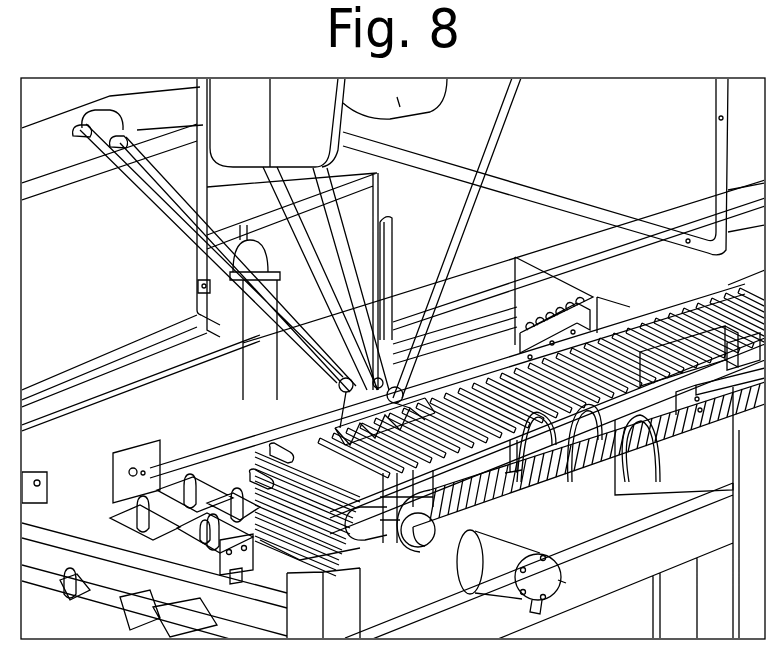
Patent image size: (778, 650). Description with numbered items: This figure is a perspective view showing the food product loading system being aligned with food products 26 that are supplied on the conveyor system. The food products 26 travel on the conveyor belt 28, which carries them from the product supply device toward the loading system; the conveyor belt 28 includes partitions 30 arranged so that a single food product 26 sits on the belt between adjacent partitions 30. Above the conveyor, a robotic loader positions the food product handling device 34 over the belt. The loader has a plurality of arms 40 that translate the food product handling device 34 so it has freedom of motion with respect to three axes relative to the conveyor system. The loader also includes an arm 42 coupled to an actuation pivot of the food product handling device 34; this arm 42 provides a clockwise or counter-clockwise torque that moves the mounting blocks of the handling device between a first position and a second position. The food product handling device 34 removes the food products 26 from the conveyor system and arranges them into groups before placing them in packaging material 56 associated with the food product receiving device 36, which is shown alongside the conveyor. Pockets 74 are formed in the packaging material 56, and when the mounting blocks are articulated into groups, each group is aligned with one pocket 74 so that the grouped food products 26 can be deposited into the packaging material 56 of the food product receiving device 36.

The food products 26 is at (553, 430).
The conveyor belt 28 is at (651, 458).
The partitions 30 is at (597, 430).
The food product handling device 34 is at (437, 382).
The food product receiving device 36 is at (638, 160).
The plurality of arms 40 is at (163, 213).
The arm 42 is at (378, 195).
The packaging material 56 is at (112, 522).
The pockets 74 is at (272, 455).